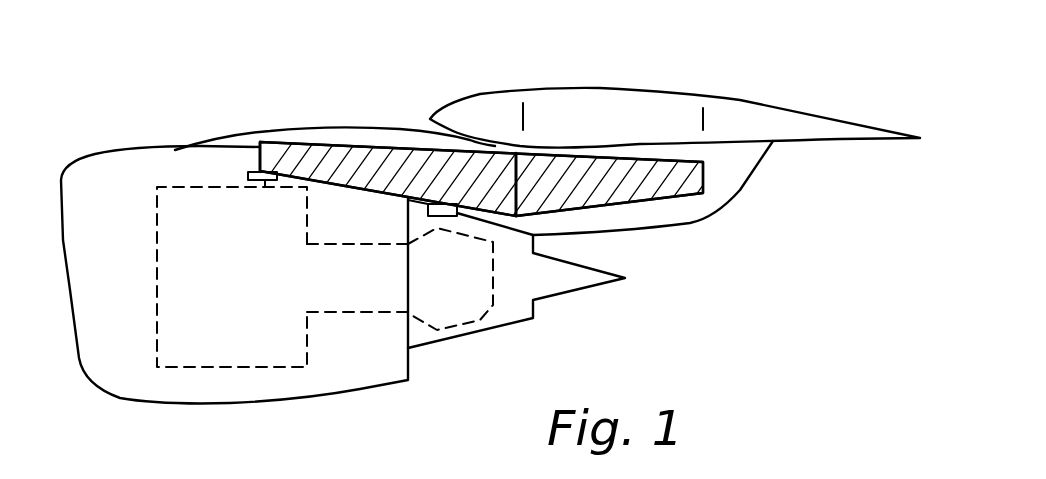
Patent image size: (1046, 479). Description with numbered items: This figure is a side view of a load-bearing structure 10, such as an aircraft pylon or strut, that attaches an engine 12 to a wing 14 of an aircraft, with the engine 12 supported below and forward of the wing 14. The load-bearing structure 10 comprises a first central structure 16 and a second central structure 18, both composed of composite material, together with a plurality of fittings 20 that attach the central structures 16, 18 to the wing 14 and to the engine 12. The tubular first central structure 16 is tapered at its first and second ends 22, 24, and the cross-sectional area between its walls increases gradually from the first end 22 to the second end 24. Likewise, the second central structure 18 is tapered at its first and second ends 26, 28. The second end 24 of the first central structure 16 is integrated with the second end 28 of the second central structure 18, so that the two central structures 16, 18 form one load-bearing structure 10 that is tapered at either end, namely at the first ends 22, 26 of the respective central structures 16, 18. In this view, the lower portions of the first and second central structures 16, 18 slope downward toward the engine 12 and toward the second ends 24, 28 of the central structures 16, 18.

The load-bearing structure 10 is at (377, 158).
The engine 12 is at (80, 280).
The wing 14 is at (742, 113).
The first central structure 16 is at (327, 158).
The second central structure 18 is at (664, 187).
The fittings 20 is at (267, 183).
The first end of the first central structure 22 is at (258, 164).
The second end of the first central structure 24 is at (510, 178).
The first end of the second central structure 26 is at (703, 183).
The second end of the second central structure 28 is at (546, 178).